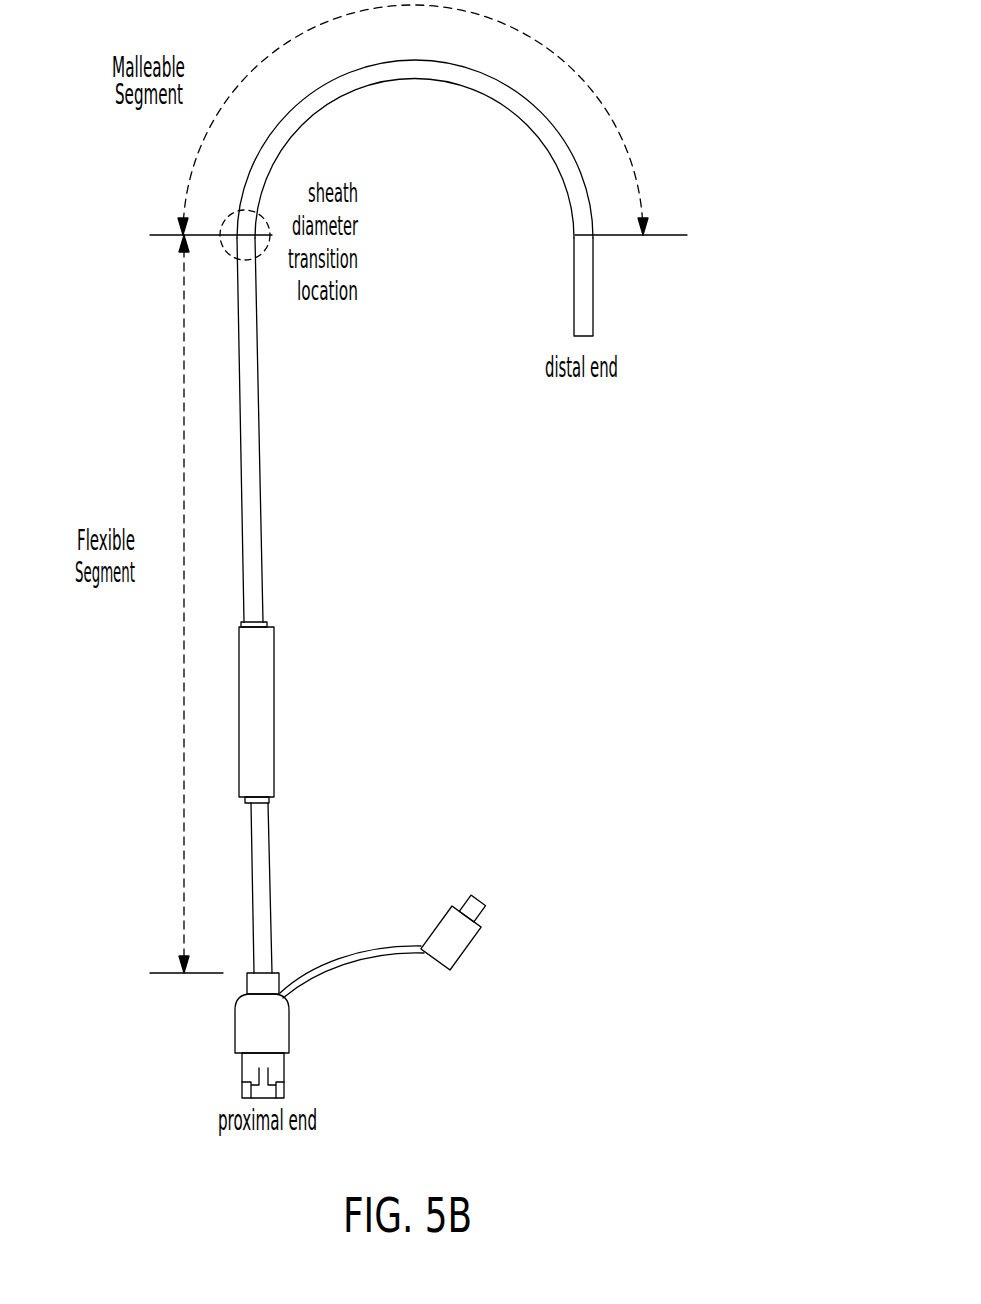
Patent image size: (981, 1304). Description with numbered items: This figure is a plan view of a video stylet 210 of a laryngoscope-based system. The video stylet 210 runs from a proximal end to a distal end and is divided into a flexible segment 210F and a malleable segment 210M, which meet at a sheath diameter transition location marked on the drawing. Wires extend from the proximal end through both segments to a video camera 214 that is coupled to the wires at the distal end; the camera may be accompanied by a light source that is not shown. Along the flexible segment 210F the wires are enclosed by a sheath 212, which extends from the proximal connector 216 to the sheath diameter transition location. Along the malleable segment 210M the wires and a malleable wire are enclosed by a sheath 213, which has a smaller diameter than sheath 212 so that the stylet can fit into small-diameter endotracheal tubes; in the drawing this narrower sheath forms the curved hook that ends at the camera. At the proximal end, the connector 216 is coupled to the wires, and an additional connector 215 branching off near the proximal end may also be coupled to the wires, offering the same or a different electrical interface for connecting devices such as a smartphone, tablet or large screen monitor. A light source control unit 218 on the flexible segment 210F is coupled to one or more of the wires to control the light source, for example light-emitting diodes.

The video stylet 210 is at (727, 82).
The malleable segment 210M is at (568, 68).
The flexible segment 210F is at (182, 438).
The sheath 212 is at (263, 587).
The sheath 213 is at (363, 68).
The video camera 214 is at (574, 287).
The additional connector 215 is at (478, 888).
The connector 216 is at (287, 1058).
The light source control unit 218 is at (276, 707).